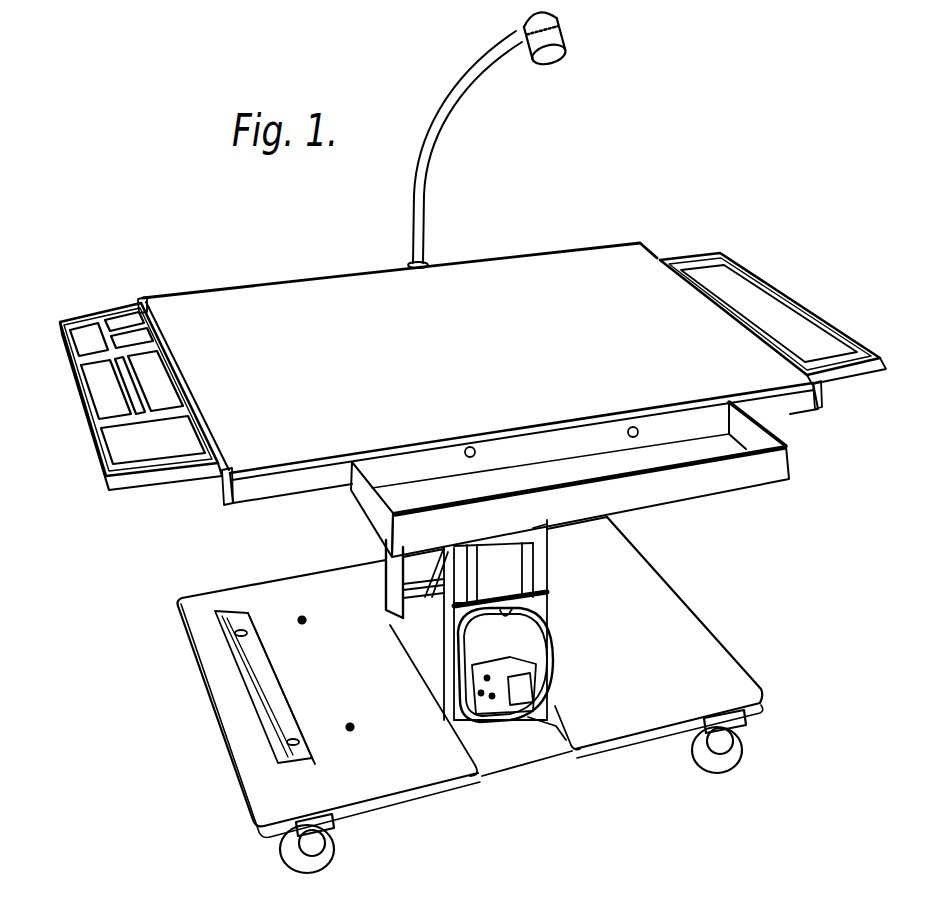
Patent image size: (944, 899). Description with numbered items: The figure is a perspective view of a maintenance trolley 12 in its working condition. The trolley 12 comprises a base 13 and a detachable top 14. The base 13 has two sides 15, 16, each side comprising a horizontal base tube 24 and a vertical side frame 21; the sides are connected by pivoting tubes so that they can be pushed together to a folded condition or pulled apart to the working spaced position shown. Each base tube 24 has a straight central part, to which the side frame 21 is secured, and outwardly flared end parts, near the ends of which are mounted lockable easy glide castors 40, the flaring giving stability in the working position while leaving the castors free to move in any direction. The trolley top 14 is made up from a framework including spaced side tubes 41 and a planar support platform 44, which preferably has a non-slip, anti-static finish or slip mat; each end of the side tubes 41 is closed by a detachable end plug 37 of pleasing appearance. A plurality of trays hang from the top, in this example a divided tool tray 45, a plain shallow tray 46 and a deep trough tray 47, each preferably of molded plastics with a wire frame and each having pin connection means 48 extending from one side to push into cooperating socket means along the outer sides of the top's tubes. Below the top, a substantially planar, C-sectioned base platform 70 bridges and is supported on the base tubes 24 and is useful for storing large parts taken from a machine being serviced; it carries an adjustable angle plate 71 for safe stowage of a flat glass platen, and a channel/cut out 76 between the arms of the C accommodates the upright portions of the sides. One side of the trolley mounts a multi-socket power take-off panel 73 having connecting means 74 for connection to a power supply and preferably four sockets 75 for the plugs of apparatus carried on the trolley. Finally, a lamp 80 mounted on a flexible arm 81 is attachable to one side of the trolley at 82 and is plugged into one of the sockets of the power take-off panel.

The trolley 12 is at (598, 241).
The base 13 is at (552, 566).
The detachable top 14 is at (547, 368).
The side 15 is at (543, 581).
The side 16 is at (393, 587).
The vertical side frame 21 is at (532, 610).
The horizontal base tube 24 is at (420, 623).
The detachable end plug 37 is at (143, 300).
The lockable easy glide castors 40 is at (720, 760).
The side tubes 41 is at (284, 488).
The planar support platform 44 is at (293, 300).
The divided tool tray 45 is at (146, 464).
The plain shallow tray 46 is at (753, 298).
The deep trough tray 47 is at (776, 437).
The pin connection means 48 is at (471, 447).
The base platform 70 is at (257, 797).
The adjustable angle plate 71 is at (250, 703).
The multi-socket power take-off panel 73 is at (497, 727).
The connecting means 74 is at (500, 720).
The sockets 75 is at (547, 730).
The channel/cut out 76 is at (428, 658).
The lamp 80 is at (559, 18).
The flexible arm 81 is at (416, 178).
The lamp attachment point 82 is at (409, 263).